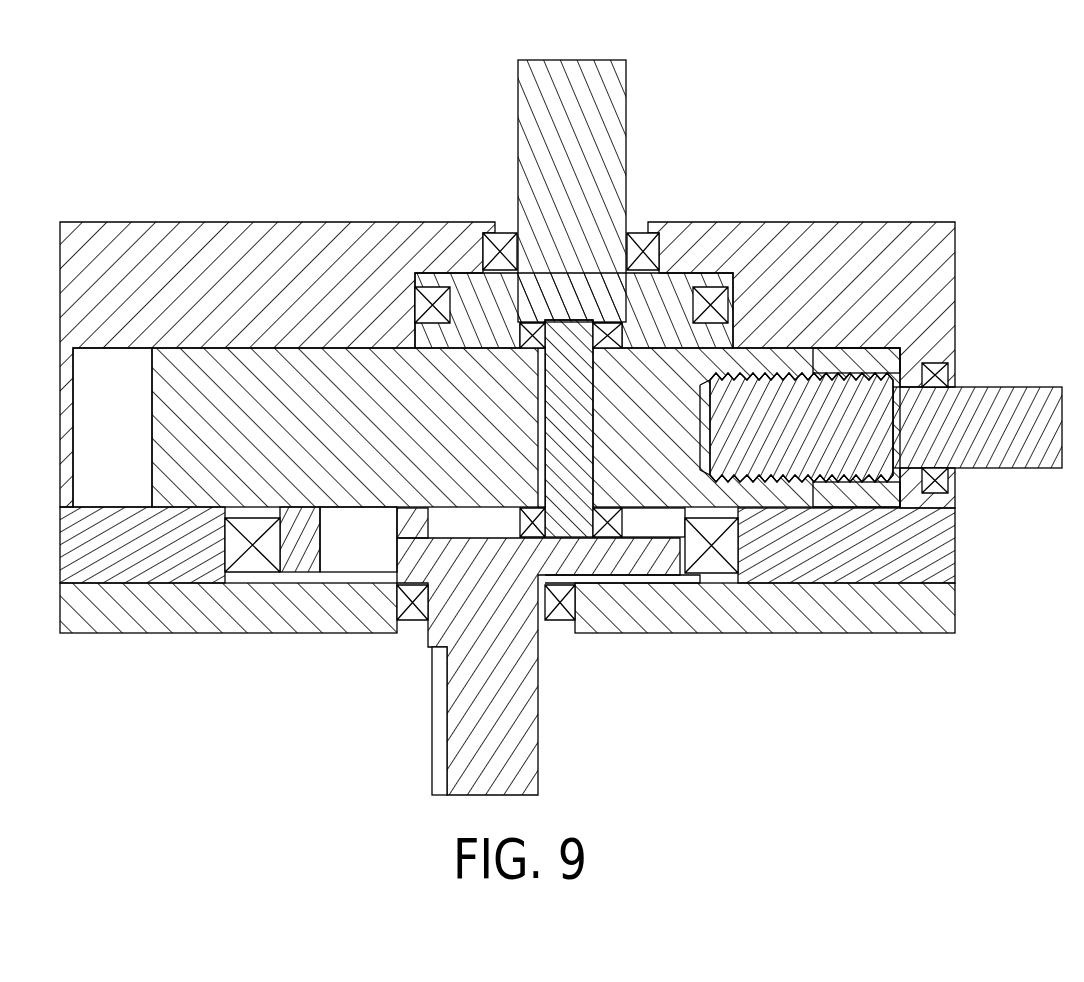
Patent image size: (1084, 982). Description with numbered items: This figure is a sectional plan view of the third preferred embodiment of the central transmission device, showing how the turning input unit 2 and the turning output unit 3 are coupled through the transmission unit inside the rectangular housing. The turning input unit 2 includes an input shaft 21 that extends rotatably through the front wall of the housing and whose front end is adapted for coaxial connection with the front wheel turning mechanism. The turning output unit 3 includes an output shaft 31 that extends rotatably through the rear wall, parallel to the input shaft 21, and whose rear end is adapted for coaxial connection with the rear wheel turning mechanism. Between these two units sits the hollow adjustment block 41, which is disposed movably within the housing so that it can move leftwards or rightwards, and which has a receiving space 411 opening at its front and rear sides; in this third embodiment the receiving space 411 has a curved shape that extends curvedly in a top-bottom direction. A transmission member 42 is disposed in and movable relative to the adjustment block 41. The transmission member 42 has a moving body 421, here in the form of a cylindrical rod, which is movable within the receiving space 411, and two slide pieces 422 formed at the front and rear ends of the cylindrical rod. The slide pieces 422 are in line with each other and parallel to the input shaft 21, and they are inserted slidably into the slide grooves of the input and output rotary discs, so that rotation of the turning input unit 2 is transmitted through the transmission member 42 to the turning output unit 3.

The turning input unit 2 is at (738, 350).
The input shaft 21 is at (572, 82).
The turning output unit 3 is at (548, 664).
The output shaft 31 is at (520, 700).
The adjustment block 41 is at (237, 370).
The receiving space 411 is at (553, 400).
The transmission member 42 is at (738, 418).
The moving body 421 is at (585, 437).
The slide pieces 422 is at (568, 327).